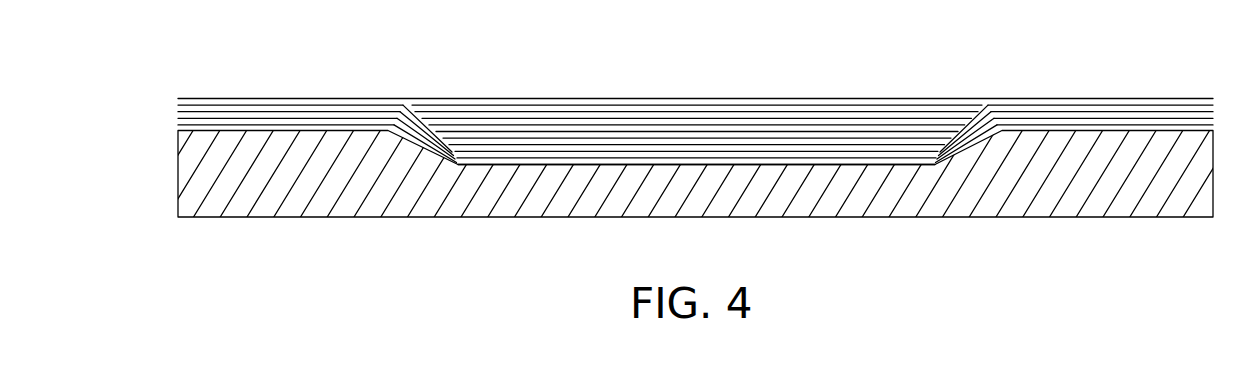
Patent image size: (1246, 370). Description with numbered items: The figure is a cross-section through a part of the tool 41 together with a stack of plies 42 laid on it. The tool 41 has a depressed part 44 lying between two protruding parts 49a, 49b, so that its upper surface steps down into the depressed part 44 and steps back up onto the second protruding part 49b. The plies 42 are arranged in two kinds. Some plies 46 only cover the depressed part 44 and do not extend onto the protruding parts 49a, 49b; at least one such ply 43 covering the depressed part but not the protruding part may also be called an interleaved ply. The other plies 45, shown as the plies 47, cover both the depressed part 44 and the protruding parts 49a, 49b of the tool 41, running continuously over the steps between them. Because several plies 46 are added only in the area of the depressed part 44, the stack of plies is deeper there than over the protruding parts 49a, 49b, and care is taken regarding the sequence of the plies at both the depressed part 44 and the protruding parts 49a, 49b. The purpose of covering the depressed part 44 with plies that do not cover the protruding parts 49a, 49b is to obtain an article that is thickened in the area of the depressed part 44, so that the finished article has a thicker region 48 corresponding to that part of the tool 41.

The tool 41 is at (237, 186).
The plies 42 is at (419, 72).
The ply covering the depressed part 43 is at (553, 105).
The depressed part 44 is at (789, 175).
The other plies 45 is at (274, 90).
The plies covering only the depressed part 46 is at (653, 127).
The plies covering depressed and protruding parts 47 is at (1050, 103).
The thicker region 48 is at (909, 70).
The protruding part 49a is at (303, 147).
The protruding part 49b is at (1078, 147).